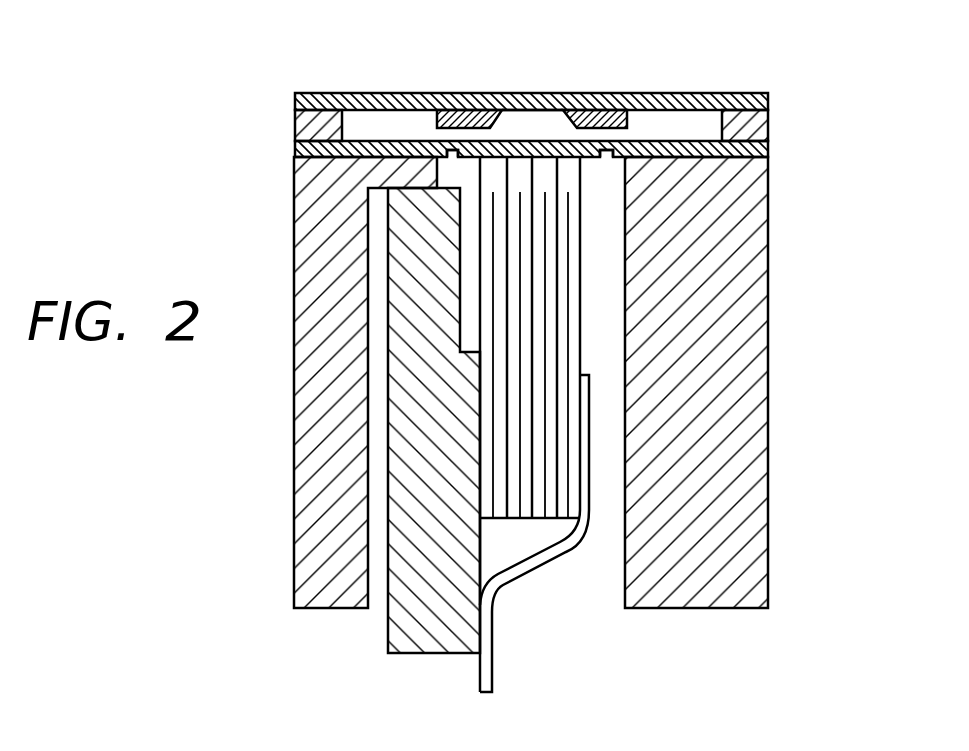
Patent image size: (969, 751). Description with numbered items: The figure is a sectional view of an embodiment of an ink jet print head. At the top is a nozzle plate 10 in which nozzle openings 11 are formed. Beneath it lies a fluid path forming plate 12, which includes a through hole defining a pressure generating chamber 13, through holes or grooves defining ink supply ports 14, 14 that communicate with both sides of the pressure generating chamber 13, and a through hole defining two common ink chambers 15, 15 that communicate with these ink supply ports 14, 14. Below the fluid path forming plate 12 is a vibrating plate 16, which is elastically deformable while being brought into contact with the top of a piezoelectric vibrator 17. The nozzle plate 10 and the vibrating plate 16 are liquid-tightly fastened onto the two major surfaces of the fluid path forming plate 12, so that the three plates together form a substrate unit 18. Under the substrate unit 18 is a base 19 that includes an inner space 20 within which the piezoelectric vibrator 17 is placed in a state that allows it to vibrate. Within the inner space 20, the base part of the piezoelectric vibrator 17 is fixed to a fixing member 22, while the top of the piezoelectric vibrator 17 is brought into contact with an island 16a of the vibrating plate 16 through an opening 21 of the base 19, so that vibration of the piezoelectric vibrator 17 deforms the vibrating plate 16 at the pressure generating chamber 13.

The nozzle plate 10 is at (295, 97).
The nozzle openings 11 is at (527, 103).
The fluid path forming plate 12 is at (295, 128).
The pressure generating chamber 13 is at (498, 121).
The ink supply ports 14 is at (450, 135).
The common ink chambers 15 is at (377, 120).
The vibrating plate 16 is at (295, 146).
The island 16a is at (584, 157).
The piezoelectric vibrator 17 is at (535, 483).
The substrate unit 18 is at (538, 157).
The base 19 is at (556, 382).
The inner space 20 is at (620, 323).
The opening 21 is at (606, 158).
The fixing member 22 is at (412, 654).